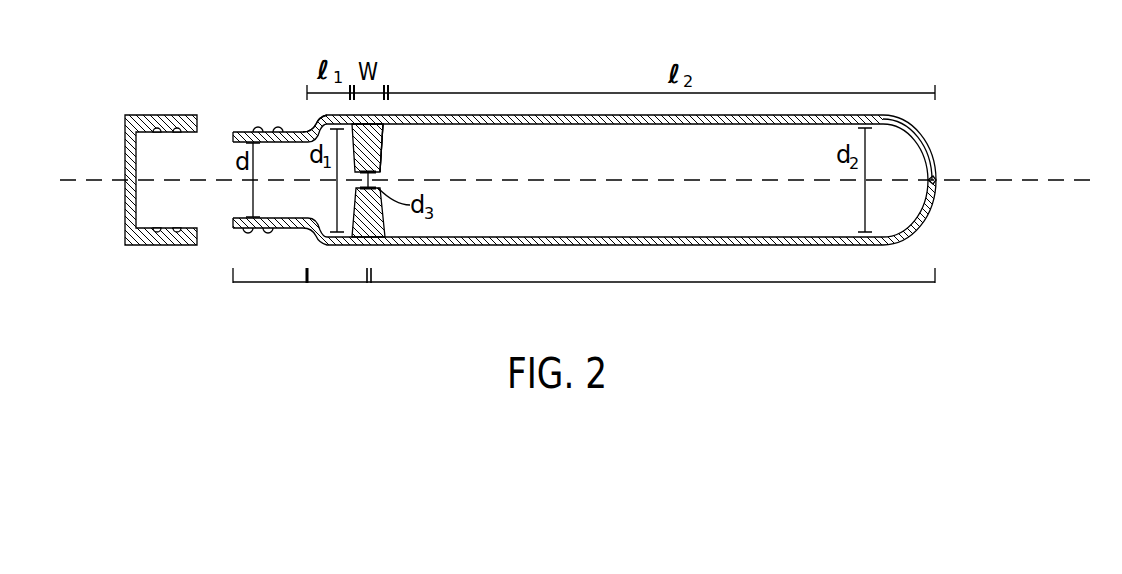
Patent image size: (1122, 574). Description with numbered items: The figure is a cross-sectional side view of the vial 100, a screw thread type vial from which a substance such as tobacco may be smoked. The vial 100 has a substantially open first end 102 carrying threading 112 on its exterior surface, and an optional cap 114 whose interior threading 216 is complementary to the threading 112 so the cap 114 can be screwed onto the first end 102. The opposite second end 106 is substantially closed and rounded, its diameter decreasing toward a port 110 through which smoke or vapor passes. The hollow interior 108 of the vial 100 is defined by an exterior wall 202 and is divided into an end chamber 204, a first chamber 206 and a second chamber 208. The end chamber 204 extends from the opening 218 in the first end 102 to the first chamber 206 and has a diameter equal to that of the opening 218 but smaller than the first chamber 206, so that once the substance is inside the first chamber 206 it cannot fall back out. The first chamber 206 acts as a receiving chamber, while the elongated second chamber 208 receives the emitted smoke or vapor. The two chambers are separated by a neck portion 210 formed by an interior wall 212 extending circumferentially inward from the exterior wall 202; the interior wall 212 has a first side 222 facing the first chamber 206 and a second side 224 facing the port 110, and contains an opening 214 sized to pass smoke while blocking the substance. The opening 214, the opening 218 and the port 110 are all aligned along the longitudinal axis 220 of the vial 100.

The vial 100 is at (822, 45).
The first end 102 is at (607, 127).
The second end 106 is at (935, 134).
The hollow interior 108 is at (683, 167).
The port 110 is at (938, 177).
The threading 112 is at (280, 124).
The cap 114 is at (161, 151).
The exterior wall 202 is at (620, 127).
The end chamber 204 is at (270, 283).
The first chamber 206 is at (338, 283).
The second chamber 208 is at (653, 283).
The neck portion 210 is at (409, 128).
The interior wall 212 is at (383, 132).
The opening 214 is at (383, 176).
The threading 216 is at (157, 133).
The opening 218 is at (236, 198).
The longitudinal axis 220 is at (1033, 178).
The first side 222 is at (312, 128).
The second side 224 is at (386, 160).